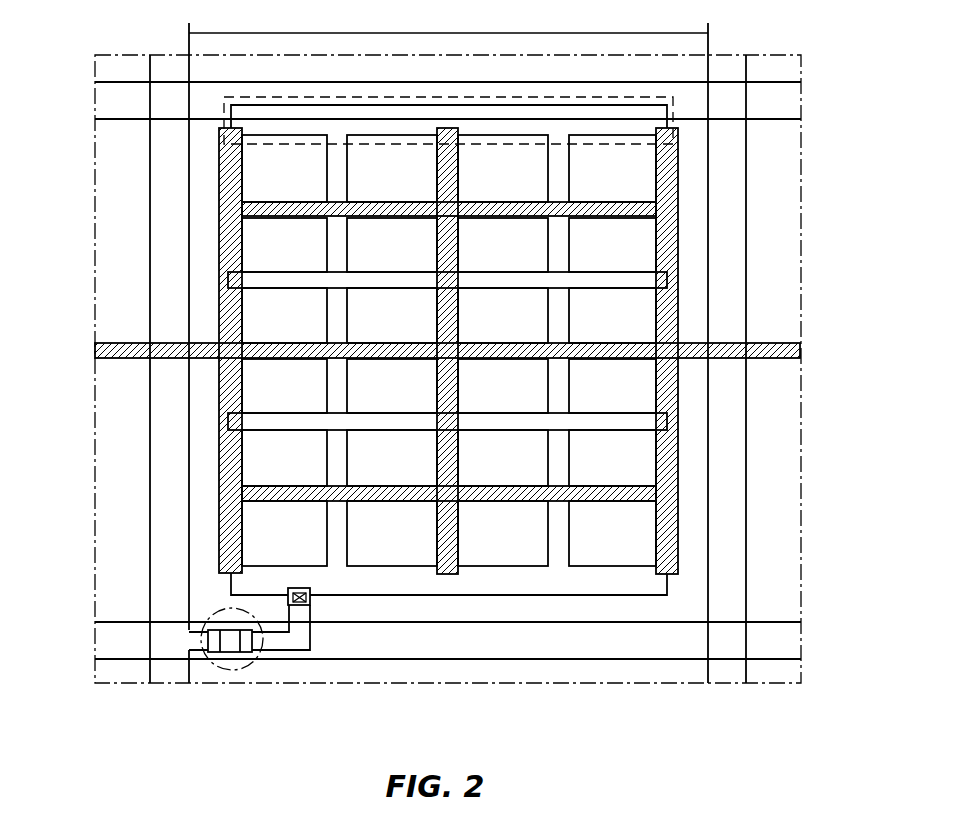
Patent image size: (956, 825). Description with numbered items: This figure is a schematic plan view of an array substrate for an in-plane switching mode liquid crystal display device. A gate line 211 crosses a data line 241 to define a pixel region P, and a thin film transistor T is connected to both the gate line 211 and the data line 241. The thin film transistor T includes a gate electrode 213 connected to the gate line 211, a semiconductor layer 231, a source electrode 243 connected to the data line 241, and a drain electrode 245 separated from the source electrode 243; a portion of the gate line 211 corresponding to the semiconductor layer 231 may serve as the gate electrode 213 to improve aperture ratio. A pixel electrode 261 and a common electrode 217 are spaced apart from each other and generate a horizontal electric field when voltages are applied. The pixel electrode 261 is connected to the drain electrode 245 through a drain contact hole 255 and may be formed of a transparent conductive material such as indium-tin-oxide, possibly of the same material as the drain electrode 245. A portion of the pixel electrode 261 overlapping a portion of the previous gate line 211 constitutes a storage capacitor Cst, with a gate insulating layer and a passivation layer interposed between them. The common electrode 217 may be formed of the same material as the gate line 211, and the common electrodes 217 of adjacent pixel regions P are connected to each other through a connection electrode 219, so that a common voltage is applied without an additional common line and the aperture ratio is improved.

The gate line 211 is at (765, 92).
The data line 241 is at (165, 677).
The connection electrode 219 is at (120, 344).
The common electrode 217 is at (679, 530).
The pixel electrode 261 is at (620, 588).
The drain contact hole 255 is at (311, 598).
The drain electrode 245 is at (302, 642).
The source electrode 243 is at (203, 650).
The gate electrode 213 is at (232, 655).
The semiconductor layer 231 is at (227, 630).
The thin film transistor T is at (262, 655).
The storage capacitor Cst is at (224, 105).
The pixel region P is at (448, 23).